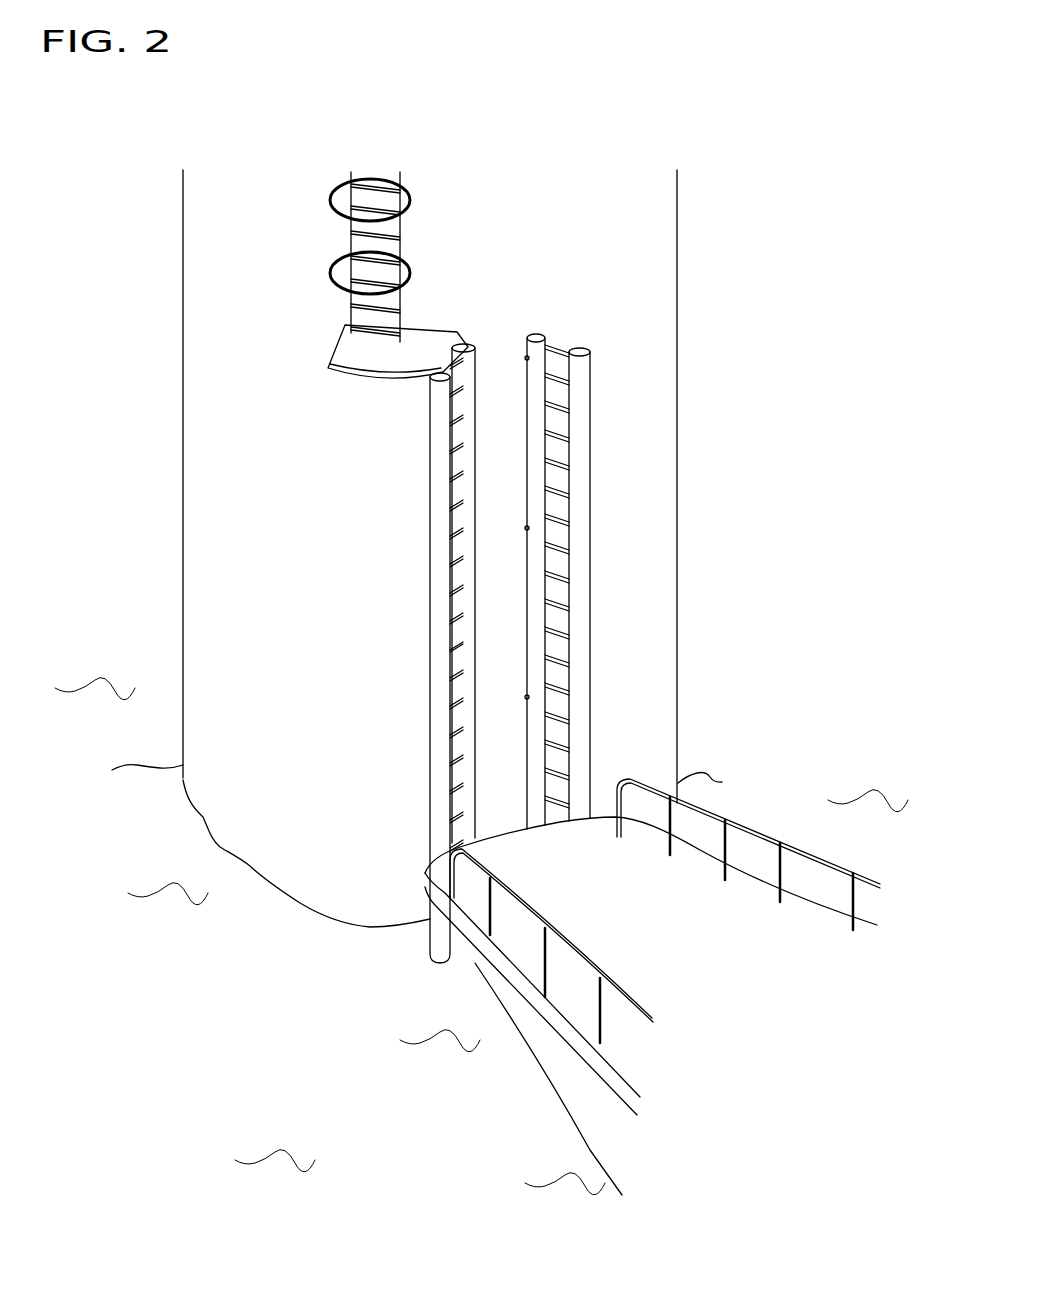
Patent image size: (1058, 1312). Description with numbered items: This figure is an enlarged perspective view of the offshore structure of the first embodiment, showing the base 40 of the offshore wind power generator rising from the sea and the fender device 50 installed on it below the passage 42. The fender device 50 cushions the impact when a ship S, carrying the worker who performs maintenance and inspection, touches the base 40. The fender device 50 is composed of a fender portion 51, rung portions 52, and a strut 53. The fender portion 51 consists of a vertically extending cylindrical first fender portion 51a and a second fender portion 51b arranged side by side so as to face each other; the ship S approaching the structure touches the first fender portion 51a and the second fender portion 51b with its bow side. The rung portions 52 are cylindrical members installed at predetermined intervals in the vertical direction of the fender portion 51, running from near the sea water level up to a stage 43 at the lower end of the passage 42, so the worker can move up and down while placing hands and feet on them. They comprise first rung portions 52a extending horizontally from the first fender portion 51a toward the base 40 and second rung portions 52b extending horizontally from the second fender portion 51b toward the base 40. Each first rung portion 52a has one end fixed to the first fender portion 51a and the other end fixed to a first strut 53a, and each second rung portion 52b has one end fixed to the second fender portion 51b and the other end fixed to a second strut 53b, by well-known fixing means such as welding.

The base 40 is at (680, 387).
The passage 42 is at (410, 215).
The stage 43 is at (357, 358).
The fender device 50 is at (485, 711).
The fender portion 51 is at (441, 595).
The first fender portion 51a is at (435, 595).
The second fender portion 51b is at (658, 581).
The rung portions 52 is at (556, 607).
The first rung portions 52a is at (455, 638).
The second rung portions 52b is at (558, 578).
The strut 53 is at (478, 348).
The first strut 53a is at (455, 608).
The second strut 53b is at (533, 465).
The ship S is at (757, 806).